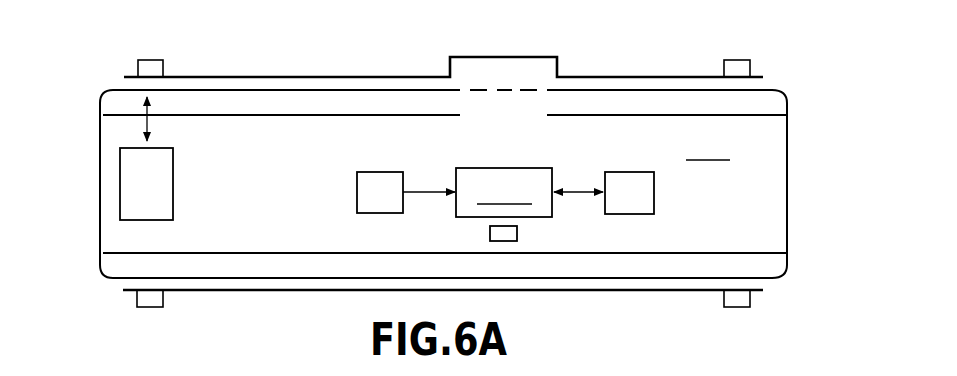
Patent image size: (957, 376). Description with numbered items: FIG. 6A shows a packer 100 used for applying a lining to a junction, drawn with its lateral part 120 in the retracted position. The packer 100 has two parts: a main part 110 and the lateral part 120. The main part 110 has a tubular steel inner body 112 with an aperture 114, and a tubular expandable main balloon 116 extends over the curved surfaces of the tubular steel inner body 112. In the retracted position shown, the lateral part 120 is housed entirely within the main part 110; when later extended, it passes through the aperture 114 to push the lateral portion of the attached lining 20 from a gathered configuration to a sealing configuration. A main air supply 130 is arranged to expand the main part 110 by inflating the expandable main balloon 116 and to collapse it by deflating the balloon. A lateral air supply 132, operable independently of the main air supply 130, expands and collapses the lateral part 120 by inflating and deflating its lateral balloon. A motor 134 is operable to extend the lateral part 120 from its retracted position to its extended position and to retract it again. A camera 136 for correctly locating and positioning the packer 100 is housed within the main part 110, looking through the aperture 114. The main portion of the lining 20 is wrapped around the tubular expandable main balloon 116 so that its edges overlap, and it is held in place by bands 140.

The packer 100 is at (834, 131).
The main part 110 is at (708, 147).
The tubular steel inner body 112 is at (755, 115).
The aperture 114 is at (516, 119).
The expandable main balloon 116 is at (100, 103).
The lining 20 is at (640, 76).
The bands 140 is at (150, 60).
The main air supply 130 is at (174, 185).
The motor 134 is at (357, 193).
The lateral part 120 is at (504, 192).
The lateral air supply 132 is at (655, 192).
The camera 136 is at (518, 233).